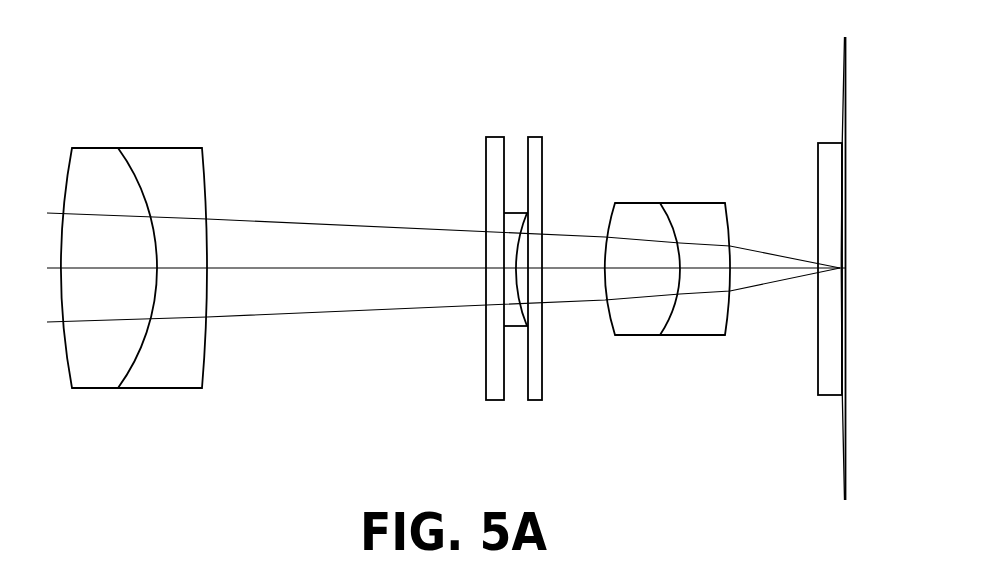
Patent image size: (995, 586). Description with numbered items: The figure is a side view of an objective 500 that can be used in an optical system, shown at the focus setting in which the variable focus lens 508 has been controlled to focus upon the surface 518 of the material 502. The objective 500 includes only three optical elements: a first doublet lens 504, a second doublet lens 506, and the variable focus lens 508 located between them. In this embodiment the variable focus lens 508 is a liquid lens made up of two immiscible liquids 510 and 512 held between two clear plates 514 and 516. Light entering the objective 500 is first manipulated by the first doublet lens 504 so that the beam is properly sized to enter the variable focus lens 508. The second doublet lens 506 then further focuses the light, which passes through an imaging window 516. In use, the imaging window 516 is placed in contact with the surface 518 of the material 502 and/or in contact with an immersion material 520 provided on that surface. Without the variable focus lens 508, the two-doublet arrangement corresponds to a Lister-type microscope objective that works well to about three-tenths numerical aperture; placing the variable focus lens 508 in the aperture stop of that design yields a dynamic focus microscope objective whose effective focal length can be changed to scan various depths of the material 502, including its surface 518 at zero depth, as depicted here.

The objective 500 is at (93, 74).
The material 502 is at (899, 254).
The first doublet lens 504 is at (249, 131).
The second doublet lens 506 is at (752, 184).
The variable focus lens 508 is at (577, 130).
The immiscible liquid 510 is at (510, 315).
The immiscible liquid 512 is at (527, 312).
The clear plate 514 is at (491, 152).
The clear plate / imaging window 516 is at (535, 395).
The surface 518 is at (843, 430).
The immersion material 520 is at (841, 140).